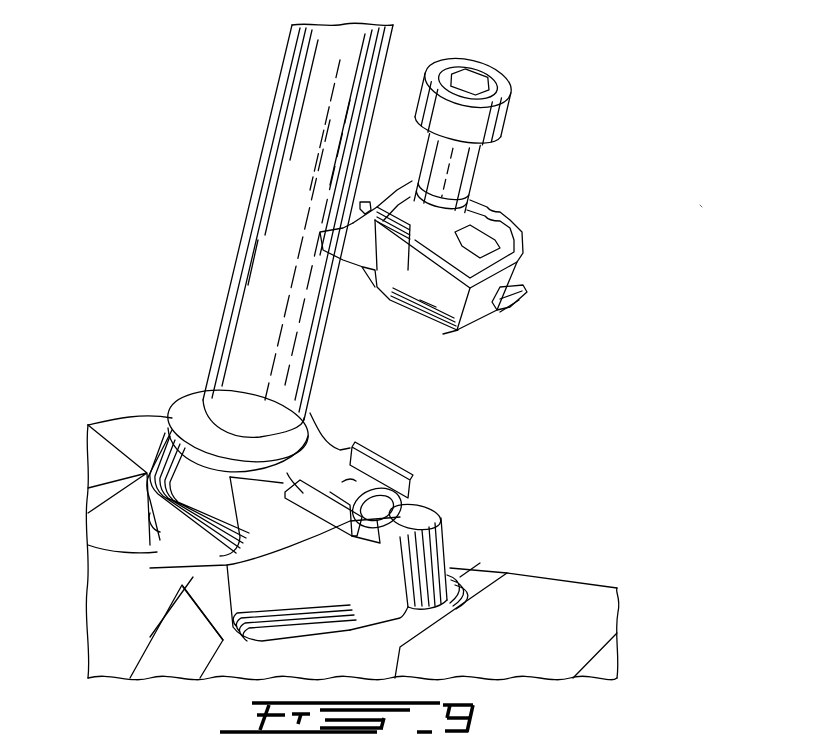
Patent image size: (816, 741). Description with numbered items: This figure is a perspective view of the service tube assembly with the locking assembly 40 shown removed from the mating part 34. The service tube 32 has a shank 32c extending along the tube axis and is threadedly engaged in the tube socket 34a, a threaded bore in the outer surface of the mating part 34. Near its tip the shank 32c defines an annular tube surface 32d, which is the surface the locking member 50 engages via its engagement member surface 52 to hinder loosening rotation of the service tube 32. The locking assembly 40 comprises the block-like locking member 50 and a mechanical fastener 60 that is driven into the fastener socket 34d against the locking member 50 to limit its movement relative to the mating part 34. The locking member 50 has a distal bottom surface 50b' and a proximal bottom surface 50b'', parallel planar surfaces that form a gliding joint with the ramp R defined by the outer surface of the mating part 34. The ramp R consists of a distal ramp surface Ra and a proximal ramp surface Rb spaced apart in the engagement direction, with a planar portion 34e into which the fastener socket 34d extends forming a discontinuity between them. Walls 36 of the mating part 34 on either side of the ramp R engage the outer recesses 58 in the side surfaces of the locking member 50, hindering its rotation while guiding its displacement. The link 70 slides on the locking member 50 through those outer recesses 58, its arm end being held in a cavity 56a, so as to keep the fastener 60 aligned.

The service tube 32 is at (190, 170).
The shank 32c is at (275, 285).
The annular tube surface 32d is at (201, 416).
The mating part 34 is at (155, 346).
The tube socket 34a is at (88, 425).
The fastener socket 34d is at (227, 566).
The portion of the outer housing surface 34e is at (412, 500).
The walls 36 is at (382, 471).
The locking assembly 40 is at (705, 200).
The locking member 50 is at (543, 229).
The distal bottom surface 50b' is at (468, 369).
The proximal bottom surface 50b'' is at (361, 315).
The engagement member surface 52 is at (366, 203).
The cavity 56a is at (505, 320).
The outer recesses 58 is at (428, 295).
The mechanical fastener 60 is at (533, 87).
The link 70 is at (543, 311).
The ramp R is at (482, 530).
The distal ramp surface Ra is at (445, 522).
The proximal ramp surface Rb is at (340, 487).